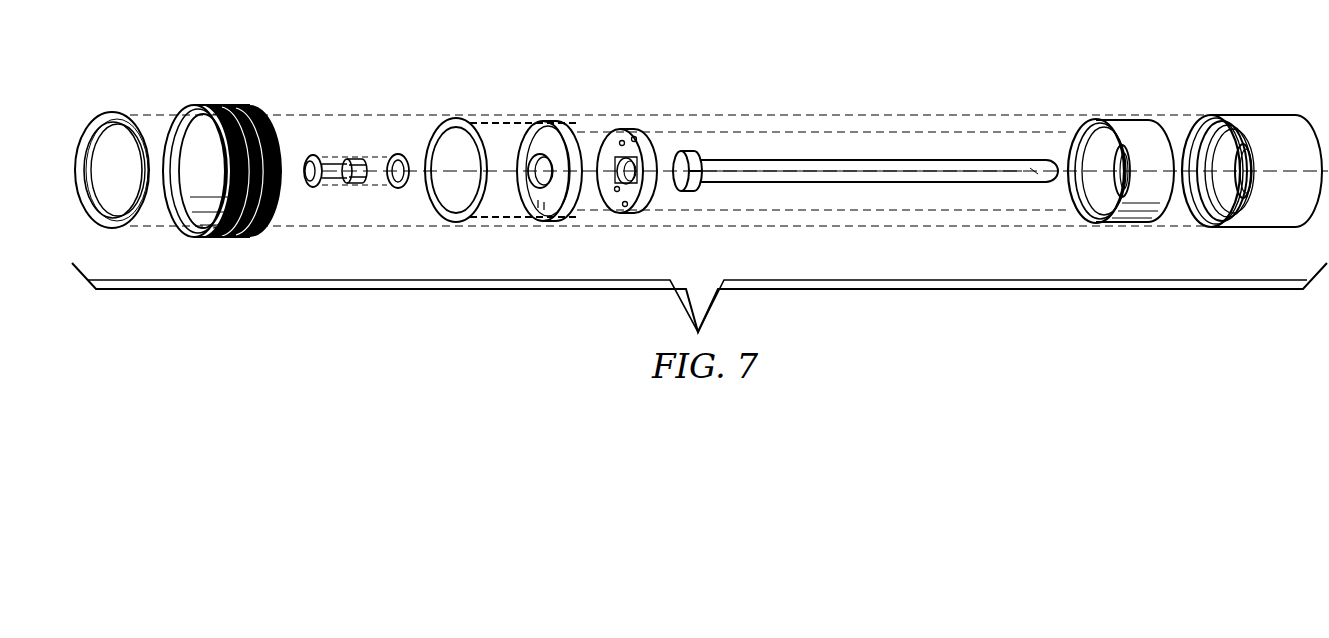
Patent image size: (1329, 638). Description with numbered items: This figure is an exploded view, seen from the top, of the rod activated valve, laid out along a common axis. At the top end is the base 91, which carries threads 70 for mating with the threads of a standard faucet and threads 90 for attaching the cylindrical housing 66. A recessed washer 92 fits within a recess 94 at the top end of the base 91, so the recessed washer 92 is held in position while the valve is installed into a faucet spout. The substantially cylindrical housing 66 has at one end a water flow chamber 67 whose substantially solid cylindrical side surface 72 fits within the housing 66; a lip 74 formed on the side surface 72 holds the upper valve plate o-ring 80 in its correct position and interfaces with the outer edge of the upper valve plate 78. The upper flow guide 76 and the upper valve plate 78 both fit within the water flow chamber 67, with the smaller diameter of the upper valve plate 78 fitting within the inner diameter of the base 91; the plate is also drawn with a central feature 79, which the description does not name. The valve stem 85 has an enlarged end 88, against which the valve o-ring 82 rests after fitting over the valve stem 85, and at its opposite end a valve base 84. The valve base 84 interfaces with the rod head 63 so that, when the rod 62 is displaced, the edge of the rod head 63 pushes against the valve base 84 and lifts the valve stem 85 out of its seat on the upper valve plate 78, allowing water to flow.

The rod 62 is at (773, 161).
The rod head 63 is at (690, 190).
The cylindrical housing 66 is at (1245, 118).
The water flow chamber 67 is at (1130, 75).
The threads 70 is at (247, 178).
The cylindrical side surface 72 is at (1132, 156).
The lip 74 is at (1112, 121).
The upper flow guide 76 is at (637, 131).
The upper valve plate 78 is at (540, 175).
The hub 79 is at (540, 123).
The upper valve plate o-ring 80 is at (456, 120).
The valve o-ring 82 is at (399, 190).
The valve base 84 is at (354, 158).
The valve stem 85 is at (382, 165).
The enlarged end 88 is at (317, 188).
The threads 90 is at (264, 143).
The base 91 is at (246, 70).
The recessed washer 92 is at (114, 229).
The recess 94 is at (186, 224).